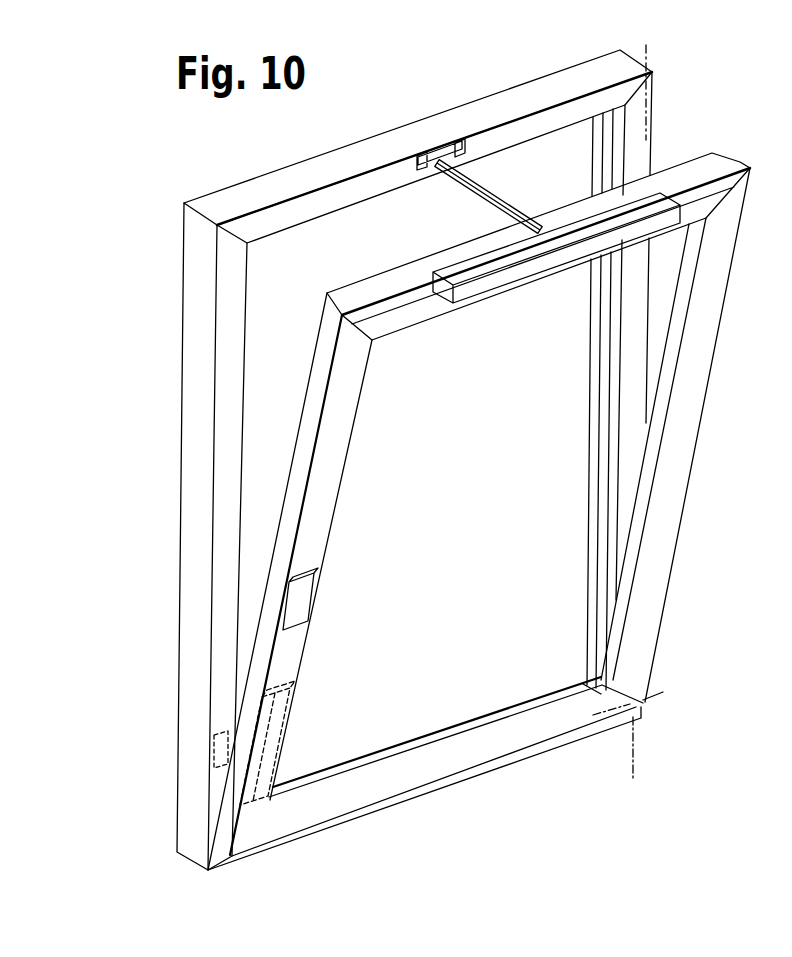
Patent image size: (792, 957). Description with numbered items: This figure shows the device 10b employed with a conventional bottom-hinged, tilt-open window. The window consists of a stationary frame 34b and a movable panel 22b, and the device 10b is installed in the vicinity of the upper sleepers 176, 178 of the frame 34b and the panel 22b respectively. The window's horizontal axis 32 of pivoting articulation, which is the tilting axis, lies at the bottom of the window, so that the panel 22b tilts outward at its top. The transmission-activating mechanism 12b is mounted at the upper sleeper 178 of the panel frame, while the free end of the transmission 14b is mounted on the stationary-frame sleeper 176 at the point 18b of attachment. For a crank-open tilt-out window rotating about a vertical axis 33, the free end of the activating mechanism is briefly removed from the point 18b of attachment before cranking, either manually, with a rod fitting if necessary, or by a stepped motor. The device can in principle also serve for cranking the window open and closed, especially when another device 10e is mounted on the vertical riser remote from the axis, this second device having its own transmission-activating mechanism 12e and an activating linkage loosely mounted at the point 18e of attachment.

The upper sleeper of frame 176 is at (317, 173).
The frame 34b is at (493, 103).
The upper sleeper of panel 178 is at (410, 307).
The panel 22b is at (652, 604).
The device 10b is at (527, 204).
The point of attachment 18b is at (450, 145).
The transmission 14b is at (522, 203).
The transmission-activating mechanism 12b is at (498, 276).
The device 10e is at (242, 740).
The point of attachment 18e is at (215, 768).
The transmission-activating mechanism 12e is at (276, 745).
The horizontal axis of pivoting articulation 32 is at (663, 693).
The vertical axis of rotation 33 is at (636, 762).